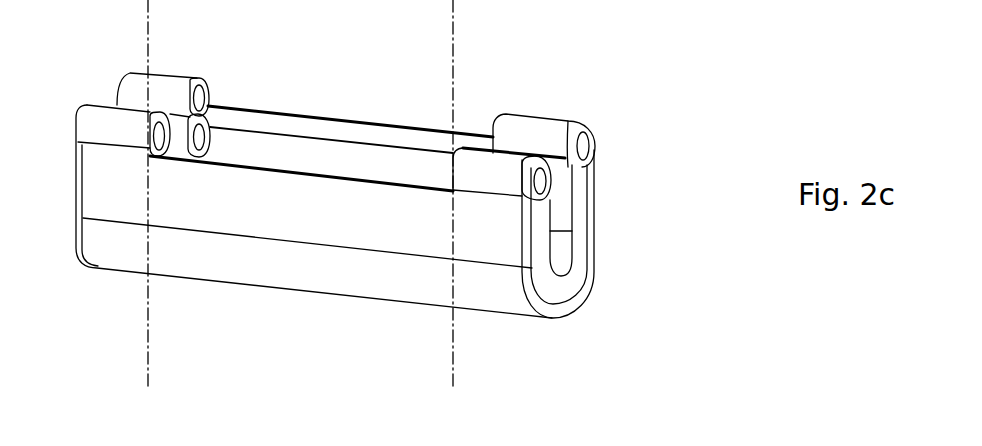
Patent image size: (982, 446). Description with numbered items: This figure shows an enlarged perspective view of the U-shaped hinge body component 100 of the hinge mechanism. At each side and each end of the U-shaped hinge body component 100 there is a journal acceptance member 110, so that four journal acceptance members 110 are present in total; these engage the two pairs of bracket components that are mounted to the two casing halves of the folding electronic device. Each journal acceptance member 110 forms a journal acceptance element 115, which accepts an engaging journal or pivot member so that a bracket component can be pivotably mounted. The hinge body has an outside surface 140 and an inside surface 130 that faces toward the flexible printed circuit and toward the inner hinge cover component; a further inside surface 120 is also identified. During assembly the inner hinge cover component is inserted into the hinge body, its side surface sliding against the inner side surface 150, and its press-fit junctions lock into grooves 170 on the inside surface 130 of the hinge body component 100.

The U-shaped hinge body component 100 is at (268, 320).
The journal acceptance member 110 is at (137, 87).
The journal acceptance element 115 is at (593, 145).
The inside surface 120 is at (566, 293).
The inside surface 130 is at (324, 150).
The outside surface 140 is at (319, 274).
The inner side surface 150 is at (205, 126).
The locking groove element 170 is at (171, 160).